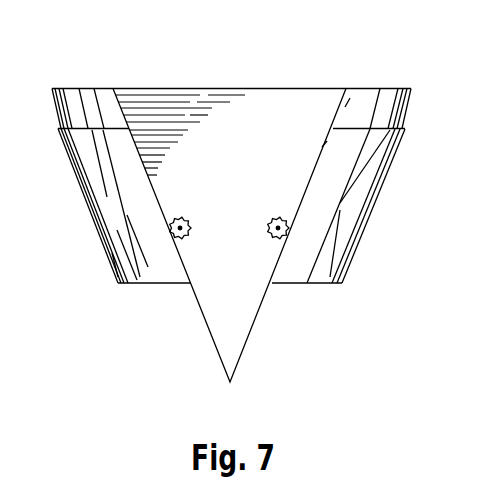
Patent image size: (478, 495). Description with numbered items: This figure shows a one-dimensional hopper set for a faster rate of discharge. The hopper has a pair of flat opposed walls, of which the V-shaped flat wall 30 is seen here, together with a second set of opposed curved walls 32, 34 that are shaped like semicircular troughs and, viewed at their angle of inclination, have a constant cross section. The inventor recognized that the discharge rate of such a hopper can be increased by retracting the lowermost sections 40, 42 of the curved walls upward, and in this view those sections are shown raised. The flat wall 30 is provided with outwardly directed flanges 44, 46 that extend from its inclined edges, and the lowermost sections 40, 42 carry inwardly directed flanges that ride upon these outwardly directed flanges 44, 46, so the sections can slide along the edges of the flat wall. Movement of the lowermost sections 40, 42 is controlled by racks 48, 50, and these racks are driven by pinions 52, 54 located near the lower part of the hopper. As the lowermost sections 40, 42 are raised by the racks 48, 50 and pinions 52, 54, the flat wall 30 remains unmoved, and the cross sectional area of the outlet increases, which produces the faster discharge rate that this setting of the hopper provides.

The V-shaped flat wall 30 is at (243, 137).
The curved wall 32 is at (88, 97).
The curved wall 34 is at (382, 112).
The lowermost section 40 is at (137, 205).
The lowermost section 42 is at (348, 207).
The outwardly directed flange 44 is at (120, 110).
The outwardly directed flange 46 is at (345, 107).
The rack 48 is at (158, 200).
The rack 50 is at (322, 147).
The pinion 52 is at (178, 238).
The pinion 54 is at (278, 238).